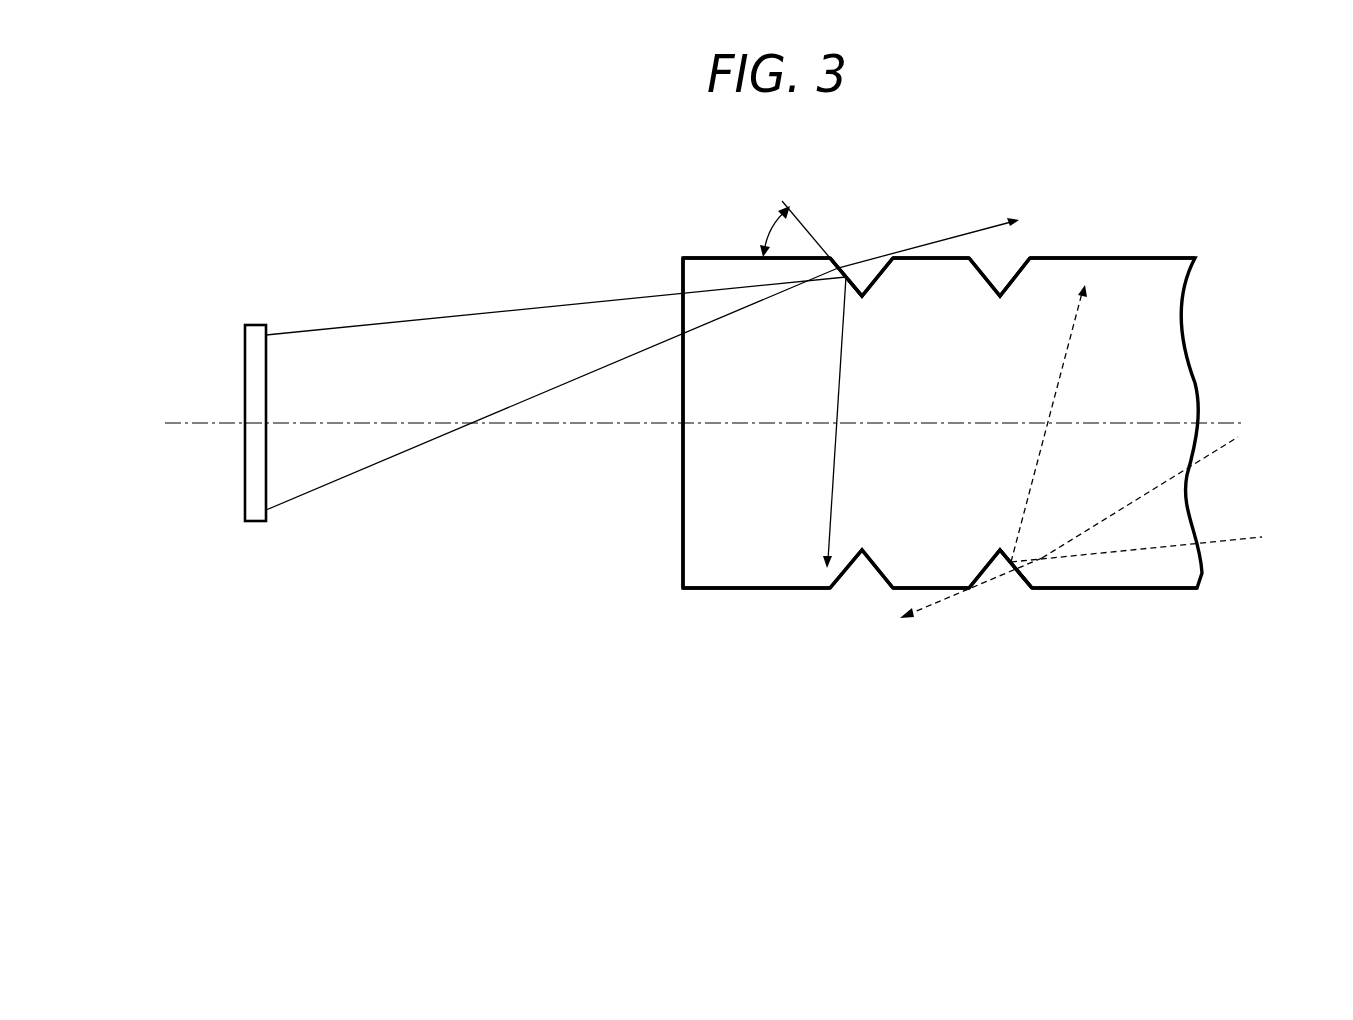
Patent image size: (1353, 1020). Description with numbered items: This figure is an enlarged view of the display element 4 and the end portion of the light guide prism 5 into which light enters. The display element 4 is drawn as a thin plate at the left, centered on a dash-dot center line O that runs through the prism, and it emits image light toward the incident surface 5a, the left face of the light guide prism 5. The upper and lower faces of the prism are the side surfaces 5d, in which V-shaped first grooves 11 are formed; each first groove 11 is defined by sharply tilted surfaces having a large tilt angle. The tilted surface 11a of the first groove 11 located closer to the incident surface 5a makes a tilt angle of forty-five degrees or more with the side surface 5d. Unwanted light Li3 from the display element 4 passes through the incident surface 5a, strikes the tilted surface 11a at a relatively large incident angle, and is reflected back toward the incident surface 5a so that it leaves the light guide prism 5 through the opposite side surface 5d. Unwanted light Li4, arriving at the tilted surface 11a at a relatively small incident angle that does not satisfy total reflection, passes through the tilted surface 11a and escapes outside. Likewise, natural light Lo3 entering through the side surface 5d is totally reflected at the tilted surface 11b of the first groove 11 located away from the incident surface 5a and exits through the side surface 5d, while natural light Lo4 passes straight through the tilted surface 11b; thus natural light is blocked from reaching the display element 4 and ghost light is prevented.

The display element 4 is at (245, 361).
The light guide prism 5 is at (937, 476).
The incident surface 5a is at (682, 472).
The side surface 5d is at (717, 257).
The first groove 11 is at (869, 252).
The tilted surface 11a is at (843, 258).
The tilted surface 11b is at (1027, 580).
The unwanted light Li3 is at (350, 327).
The unwanted light Li4 is at (392, 457).
The natural light Lo3 is at (1230, 540).
The natural light Lo4 is at (1220, 450).
The optical axis O is at (691, 424).